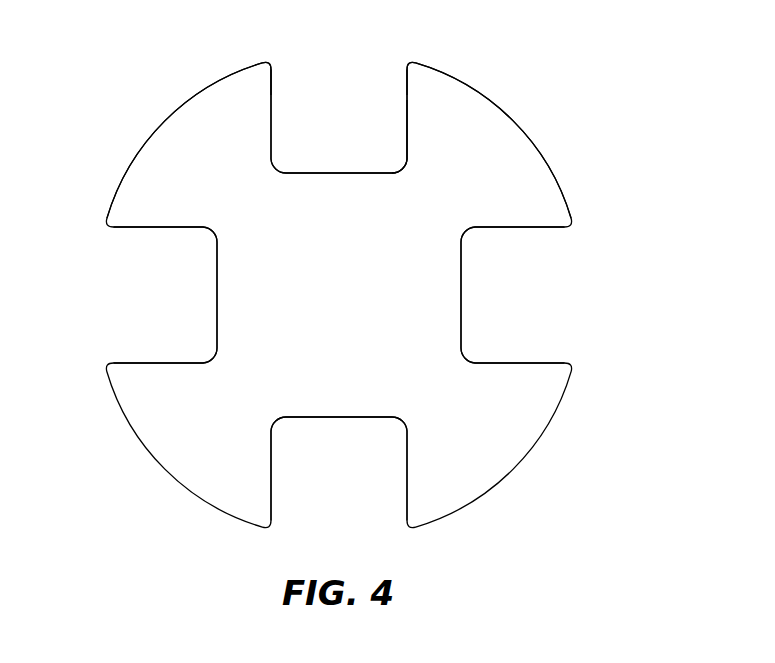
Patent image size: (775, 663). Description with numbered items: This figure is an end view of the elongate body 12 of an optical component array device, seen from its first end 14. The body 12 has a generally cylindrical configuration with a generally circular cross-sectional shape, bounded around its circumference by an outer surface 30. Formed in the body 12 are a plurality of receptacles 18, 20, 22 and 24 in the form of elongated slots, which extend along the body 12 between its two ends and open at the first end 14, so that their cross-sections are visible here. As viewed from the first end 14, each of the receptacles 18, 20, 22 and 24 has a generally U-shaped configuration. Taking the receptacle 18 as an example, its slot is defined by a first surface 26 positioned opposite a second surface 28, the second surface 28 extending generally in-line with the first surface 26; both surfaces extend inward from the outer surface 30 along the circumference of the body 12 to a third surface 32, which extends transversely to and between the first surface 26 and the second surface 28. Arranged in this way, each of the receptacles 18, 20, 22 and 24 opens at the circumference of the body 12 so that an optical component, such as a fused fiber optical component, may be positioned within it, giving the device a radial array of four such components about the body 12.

The elongate body 12 is at (116, 84).
The first end 14 is at (282, 238).
The receptacle 18 is at (333, 130).
The receptacle 20 is at (510, 285).
The receptacle 22 is at (330, 460).
The receptacle 24 is at (165, 288).
The first surface 26 is at (273, 90).
The second surface 28 is at (405, 90).
The outer surface 30 is at (495, 103).
The third surface 32 is at (368, 173).